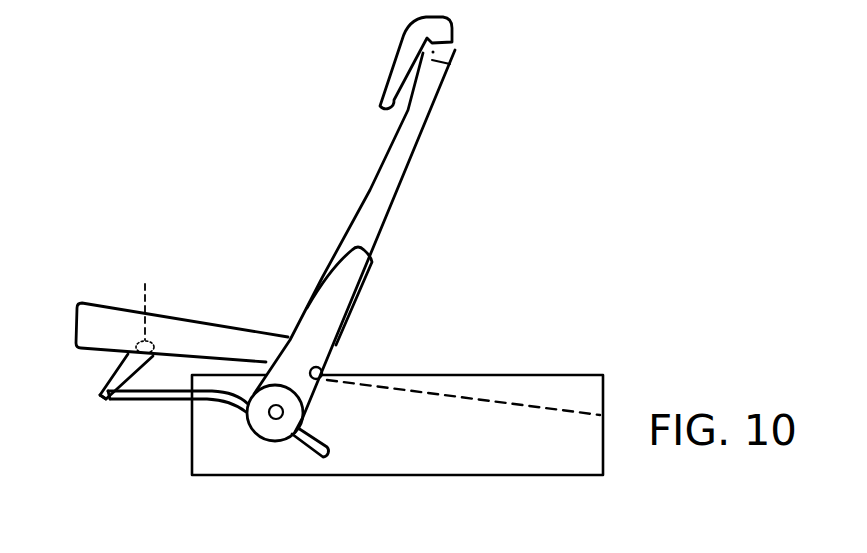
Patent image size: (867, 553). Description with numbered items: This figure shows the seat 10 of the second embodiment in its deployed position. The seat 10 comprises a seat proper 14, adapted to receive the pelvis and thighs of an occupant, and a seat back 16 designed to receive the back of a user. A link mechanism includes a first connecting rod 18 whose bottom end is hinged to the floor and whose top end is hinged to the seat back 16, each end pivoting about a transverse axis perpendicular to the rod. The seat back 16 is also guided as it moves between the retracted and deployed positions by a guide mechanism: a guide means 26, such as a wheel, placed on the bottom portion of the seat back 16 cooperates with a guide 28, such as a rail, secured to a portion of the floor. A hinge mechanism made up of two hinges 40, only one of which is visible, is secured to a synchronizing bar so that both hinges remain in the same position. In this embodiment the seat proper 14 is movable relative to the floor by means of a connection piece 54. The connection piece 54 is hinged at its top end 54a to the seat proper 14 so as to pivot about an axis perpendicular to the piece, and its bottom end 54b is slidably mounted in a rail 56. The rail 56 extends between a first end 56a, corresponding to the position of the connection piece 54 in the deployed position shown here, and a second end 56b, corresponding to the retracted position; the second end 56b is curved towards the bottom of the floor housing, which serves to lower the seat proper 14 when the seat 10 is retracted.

The seat 10 is at (311, 267).
The seat proper 14 is at (182, 310).
The seat back 16 is at (405, 157).
The first connecting rod 18 is at (335, 310).
The guide means 26 is at (323, 368).
The guide 28 is at (463, 397).
The hinge 40 is at (273, 418).
The connection piece 54 is at (86, 392).
The top end of connection piece 54a is at (142, 305).
The bottom end of connection piece 54b is at (102, 397).
The rail 56 is at (216, 454).
The first end of rail 56a is at (117, 396).
The second end of rail 56b is at (327, 458).